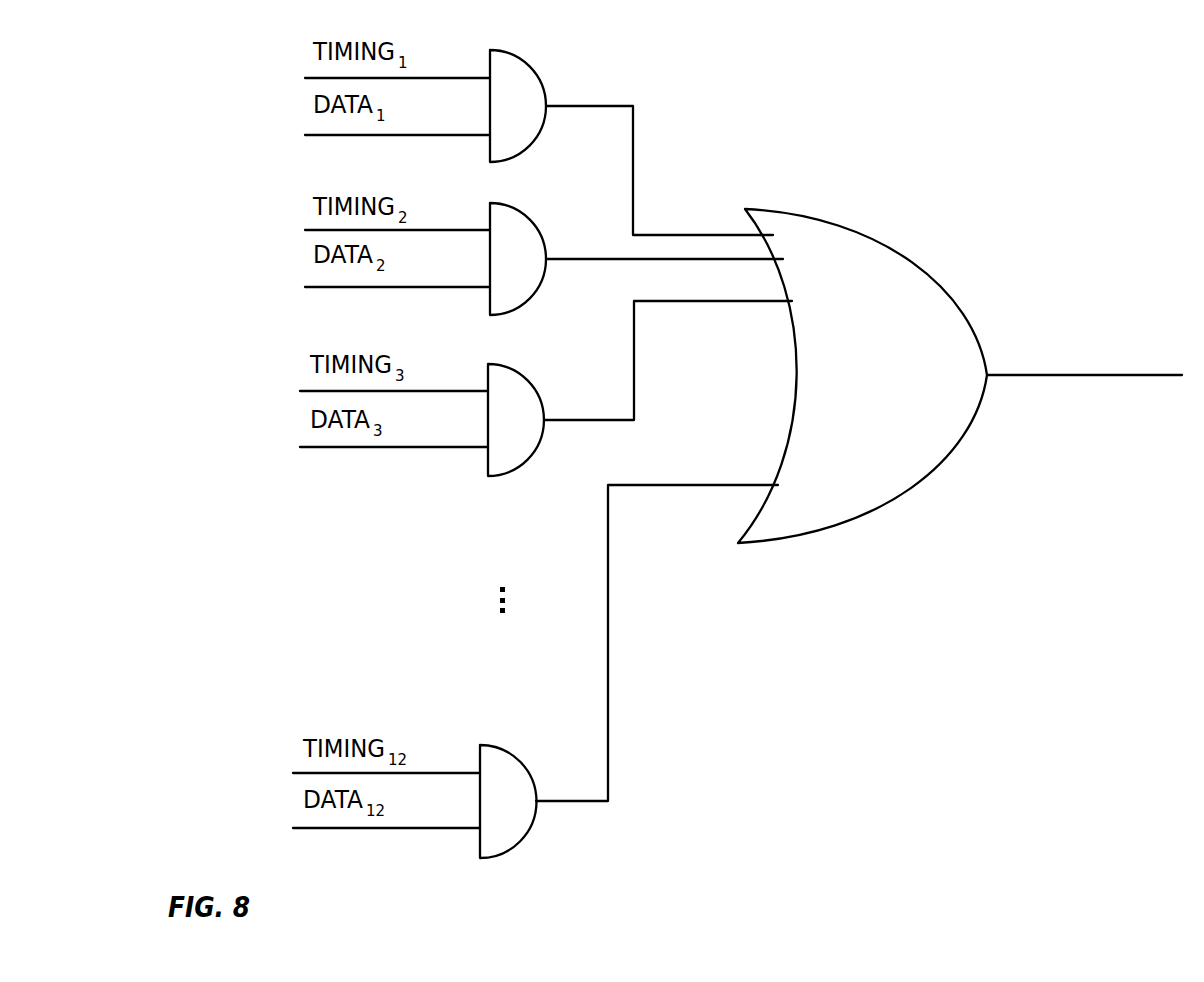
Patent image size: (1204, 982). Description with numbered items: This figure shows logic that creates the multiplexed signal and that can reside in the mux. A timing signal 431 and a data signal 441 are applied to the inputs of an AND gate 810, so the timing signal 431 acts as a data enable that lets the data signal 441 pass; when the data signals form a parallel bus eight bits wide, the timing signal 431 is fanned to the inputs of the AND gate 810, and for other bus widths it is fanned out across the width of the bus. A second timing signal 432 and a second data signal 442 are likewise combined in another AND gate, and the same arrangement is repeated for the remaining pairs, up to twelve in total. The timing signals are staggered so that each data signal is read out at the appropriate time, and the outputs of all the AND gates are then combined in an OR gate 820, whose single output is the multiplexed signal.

The timing signal 431 is at (305, 78).
The data signal 441 is at (305, 135).
The second timing signal 432 is at (305, 230).
The second data signal 442 is at (305, 287).
The AND gate 810 is at (537, 68).
The OR gate 820 is at (928, 262).